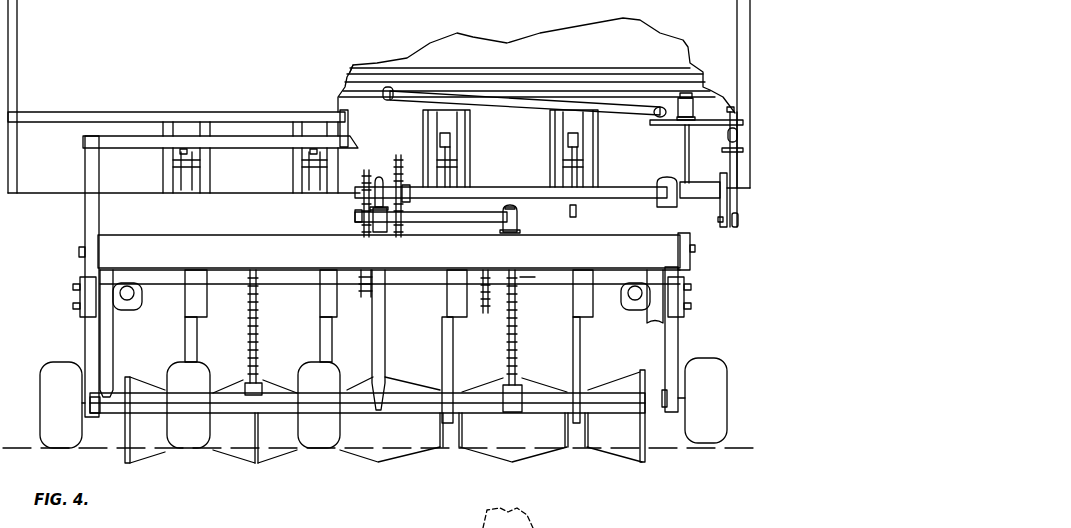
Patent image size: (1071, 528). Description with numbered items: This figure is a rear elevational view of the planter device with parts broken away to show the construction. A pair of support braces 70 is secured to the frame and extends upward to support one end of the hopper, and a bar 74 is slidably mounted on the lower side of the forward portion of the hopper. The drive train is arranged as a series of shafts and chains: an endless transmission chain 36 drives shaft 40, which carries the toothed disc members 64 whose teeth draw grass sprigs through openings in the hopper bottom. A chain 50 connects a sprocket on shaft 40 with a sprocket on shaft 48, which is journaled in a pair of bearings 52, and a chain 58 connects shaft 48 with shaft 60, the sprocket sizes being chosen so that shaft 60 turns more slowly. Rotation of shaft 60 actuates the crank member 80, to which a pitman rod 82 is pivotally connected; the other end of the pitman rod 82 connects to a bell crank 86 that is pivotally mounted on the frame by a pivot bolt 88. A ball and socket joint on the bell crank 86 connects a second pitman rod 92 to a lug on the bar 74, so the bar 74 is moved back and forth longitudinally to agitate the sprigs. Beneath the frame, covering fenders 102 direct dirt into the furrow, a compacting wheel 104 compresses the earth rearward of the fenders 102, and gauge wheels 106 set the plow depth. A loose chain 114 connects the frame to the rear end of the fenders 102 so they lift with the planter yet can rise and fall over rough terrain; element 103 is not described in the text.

The endless transmission chain 36 is at (483, 305).
The shaft 40 is at (527, 277).
The shaft 48 is at (518, 212).
The endless transmission chain 50 is at (360, 220).
The bearings 52 is at (508, 207).
The endless transmission chain 58 is at (407, 225).
The shaft 60 is at (607, 190).
The toothed disc members 64 is at (315, 222).
The support braces 70 is at (90, 212).
The bar 74 is at (627, 87).
The crank member 80 is at (722, 210).
The pitman rod 82 is at (743, 203).
The bell crank 86 is at (713, 125).
The pivot bolt 88 is at (185, 11).
The pitman rod 92 is at (627, 113).
The covering fenders 102 is at (397, 437).
The tool bar 103 is at (140, 403).
The compacting wheel 104 is at (320, 432).
The gauge wheel 106 is at (713, 425).
The chain 114 is at (260, 330).